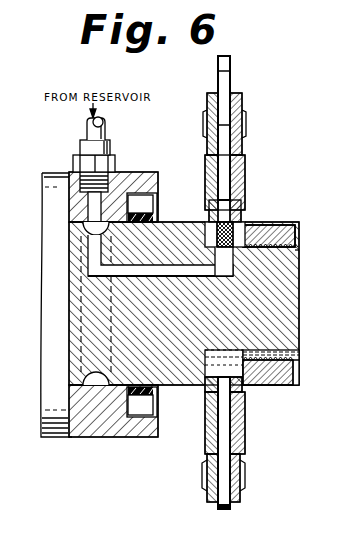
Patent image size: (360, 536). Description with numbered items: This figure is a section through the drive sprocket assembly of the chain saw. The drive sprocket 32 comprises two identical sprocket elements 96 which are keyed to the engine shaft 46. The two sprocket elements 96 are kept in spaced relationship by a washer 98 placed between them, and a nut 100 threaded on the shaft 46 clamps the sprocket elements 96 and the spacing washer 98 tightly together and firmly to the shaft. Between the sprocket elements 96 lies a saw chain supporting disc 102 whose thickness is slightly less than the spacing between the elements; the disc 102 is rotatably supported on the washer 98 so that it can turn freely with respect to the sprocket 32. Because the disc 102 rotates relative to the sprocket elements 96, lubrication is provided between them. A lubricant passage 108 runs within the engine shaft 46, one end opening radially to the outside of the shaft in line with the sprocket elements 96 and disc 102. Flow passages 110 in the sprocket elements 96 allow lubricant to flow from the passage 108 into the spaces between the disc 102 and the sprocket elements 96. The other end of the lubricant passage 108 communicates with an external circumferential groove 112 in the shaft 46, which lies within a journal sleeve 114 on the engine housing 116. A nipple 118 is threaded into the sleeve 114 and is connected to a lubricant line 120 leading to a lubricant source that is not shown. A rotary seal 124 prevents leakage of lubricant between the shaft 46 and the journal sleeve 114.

The drive sprocket 32 is at (250, 432).
The engine shaft 46 is at (298, 252).
The sprocket elements 96 is at (203, 222).
The washer 98 is at (243, 206).
The nut 100 is at (274, 383).
The saw chain supporting disc 102 is at (241, 180).
The lubricant passage 108 is at (210, 277).
The flow passages 110 is at (240, 267).
The circumferential groove 112 is at (102, 378).
The journal sleeve 114 is at (95, 438).
The engine housing 116 is at (63, 438).
The nipple 118 is at (112, 156).
The lubricant line 120 is at (104, 125).
The rotary seal 124 is at (157, 391).